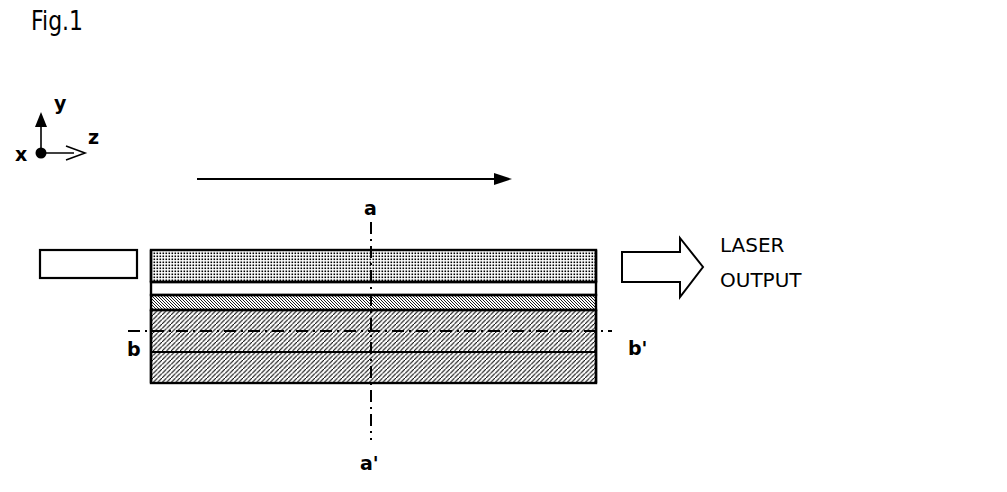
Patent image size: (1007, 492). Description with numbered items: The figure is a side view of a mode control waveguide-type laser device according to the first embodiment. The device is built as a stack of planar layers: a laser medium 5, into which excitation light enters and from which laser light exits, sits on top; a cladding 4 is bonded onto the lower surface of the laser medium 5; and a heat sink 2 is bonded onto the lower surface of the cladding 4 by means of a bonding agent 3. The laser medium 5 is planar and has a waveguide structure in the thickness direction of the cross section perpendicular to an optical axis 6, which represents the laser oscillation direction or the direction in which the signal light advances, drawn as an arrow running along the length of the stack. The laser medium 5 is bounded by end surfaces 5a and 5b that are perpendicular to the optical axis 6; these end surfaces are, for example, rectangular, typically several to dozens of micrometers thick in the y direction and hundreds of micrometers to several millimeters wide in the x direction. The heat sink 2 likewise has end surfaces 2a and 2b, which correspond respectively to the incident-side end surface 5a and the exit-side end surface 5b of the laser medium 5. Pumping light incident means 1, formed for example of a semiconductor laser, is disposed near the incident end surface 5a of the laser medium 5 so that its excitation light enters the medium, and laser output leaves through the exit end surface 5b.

The pumping light incident means 1 is at (89, 253).
The heat sink 2 is at (195, 383).
The end surface of heat sink 2a is at (150, 366).
The end surface of heat sink 2b is at (596, 365).
The bonding agent 3 is at (150, 301).
The cladding 4 is at (150, 288).
The laser medium 5 is at (197, 250).
The end surface of laser medium 5a is at (154, 262).
The end surface of laser medium 5b is at (590, 268).
The optical axis 6 is at (302, 179).